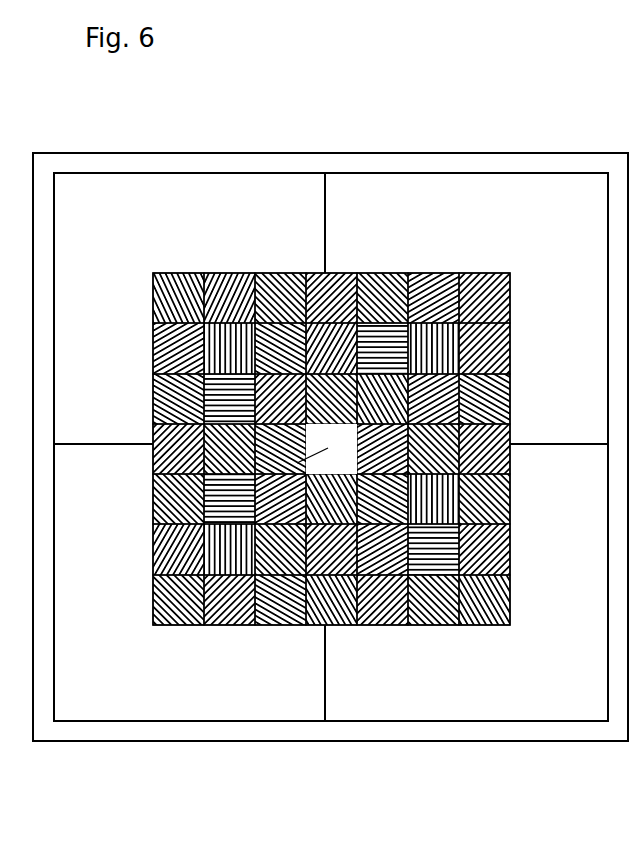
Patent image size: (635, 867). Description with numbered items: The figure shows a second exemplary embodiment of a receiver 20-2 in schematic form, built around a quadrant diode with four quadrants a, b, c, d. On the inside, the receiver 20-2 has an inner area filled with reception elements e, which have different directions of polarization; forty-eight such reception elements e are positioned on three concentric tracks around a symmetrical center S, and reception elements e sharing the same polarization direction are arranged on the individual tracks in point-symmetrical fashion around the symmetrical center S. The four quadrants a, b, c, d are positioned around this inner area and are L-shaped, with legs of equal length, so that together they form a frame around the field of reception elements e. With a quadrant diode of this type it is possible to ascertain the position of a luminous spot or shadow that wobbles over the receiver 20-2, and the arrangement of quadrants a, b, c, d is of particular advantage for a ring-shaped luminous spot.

The receiver 20-2 is at (280, 160).
The quadrant a is at (153, 195).
The quadrant b is at (455, 202).
The quadrant c is at (456, 690).
The quadrant d is at (203, 700).
The reception element e is at (378, 338).
The symmetrical center S is at (167, 625).